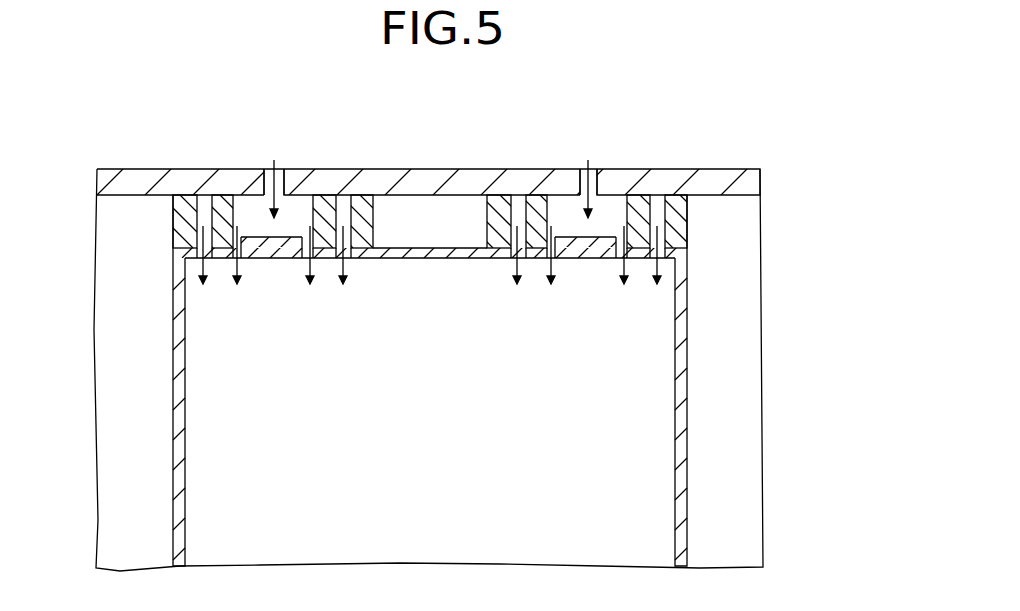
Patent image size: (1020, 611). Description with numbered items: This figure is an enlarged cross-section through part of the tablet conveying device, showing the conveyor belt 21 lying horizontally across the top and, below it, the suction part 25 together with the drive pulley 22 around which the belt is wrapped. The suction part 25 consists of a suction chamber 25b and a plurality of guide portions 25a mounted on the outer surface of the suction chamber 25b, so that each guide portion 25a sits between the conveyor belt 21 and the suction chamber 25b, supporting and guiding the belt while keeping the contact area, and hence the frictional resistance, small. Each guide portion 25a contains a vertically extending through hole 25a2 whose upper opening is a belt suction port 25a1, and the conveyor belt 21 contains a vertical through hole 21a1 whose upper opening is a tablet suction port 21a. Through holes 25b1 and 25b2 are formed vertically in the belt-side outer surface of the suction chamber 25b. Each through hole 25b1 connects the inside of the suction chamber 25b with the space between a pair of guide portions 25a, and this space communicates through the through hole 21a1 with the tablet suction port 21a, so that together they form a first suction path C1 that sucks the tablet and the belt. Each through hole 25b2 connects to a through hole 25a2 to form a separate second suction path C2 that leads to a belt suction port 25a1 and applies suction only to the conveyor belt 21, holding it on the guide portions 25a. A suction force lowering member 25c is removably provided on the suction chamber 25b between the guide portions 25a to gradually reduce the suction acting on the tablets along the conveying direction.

The conveyor belt 21 is at (420, 140).
The tablet suction port 21a is at (267, 170).
The through hole 21a1 is at (282, 172).
The drive pulley 22 is at (105, 245).
The suction part 25 is at (435, 312).
The guide portion 25a is at (426, 184).
The belt suction port 25a1 is at (205, 195).
The through hole 25a2 is at (223, 195).
The suction chamber 25b is at (432, 380).
The through hole 25b1 is at (230, 260).
The through hole 25b2 is at (194, 255).
The suction force lowering member 25c is at (258, 235).
The first suction path C1 is at (237, 283).
The second suction path C2 is at (203, 283).